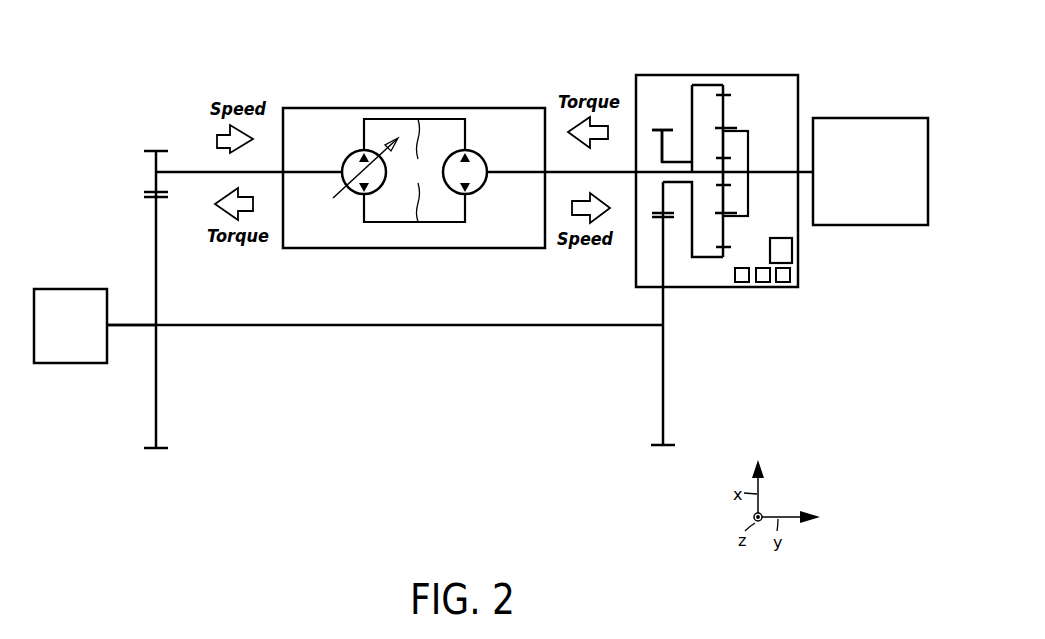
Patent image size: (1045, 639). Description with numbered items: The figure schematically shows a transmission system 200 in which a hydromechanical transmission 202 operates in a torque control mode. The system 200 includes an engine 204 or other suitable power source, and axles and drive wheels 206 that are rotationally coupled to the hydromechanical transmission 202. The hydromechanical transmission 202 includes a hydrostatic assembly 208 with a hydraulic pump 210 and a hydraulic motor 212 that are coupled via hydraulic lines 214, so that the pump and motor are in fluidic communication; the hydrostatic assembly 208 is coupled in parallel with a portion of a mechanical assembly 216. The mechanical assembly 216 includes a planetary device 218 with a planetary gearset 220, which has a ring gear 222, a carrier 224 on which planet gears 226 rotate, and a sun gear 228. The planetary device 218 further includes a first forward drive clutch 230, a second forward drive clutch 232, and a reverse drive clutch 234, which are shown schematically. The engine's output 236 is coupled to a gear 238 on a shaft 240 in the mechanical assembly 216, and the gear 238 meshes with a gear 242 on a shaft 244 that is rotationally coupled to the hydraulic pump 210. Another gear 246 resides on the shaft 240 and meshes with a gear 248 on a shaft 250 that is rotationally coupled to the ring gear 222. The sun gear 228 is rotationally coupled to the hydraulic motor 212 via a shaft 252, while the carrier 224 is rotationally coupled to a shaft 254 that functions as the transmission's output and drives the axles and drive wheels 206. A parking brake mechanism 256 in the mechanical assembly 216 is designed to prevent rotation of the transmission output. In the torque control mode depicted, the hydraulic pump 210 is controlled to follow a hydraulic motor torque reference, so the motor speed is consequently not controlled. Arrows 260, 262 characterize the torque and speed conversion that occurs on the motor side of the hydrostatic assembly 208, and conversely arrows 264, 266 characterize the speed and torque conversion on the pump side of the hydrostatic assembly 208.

The transmission system 200 is at (60, 48).
The hydromechanical transmission 202 is at (855, 61).
The engine 204 is at (40, 291).
The axles and drive wheels 206 is at (821, 119).
The hydrostatic assembly 208 is at (414, 165).
The hydraulic pump 210 is at (350, 153).
The hydraulic motor 212 is at (478, 153).
The hydraulic lines 214 is at (418, 170).
The mechanical assembly 216 is at (169, 492).
The planetary device 218 is at (725, 201).
The planetary gearset 220 is at (679, 96).
The ring gear 222 is at (731, 95).
The carrier 224 is at (740, 131).
The planet gears 226 is at (726, 234).
The sun gear 228 is at (724, 167).
The first forward drive clutch 230 is at (739, 283).
The second forward drive clutch 232 is at (785, 283).
The reverse drive clutch 234 is at (762, 283).
The engine output 236 is at (131, 325).
The gear 238 is at (157, 253).
The shaft 240 is at (228, 325).
The gear 242 is at (159, 148).
The shaft 244 is at (182, 170).
The gear 246 is at (660, 425).
The gear 248 is at (660, 195).
The shaft 250 is at (679, 184).
The shaft 252 is at (639, 170).
The shaft 254 is at (777, 174).
The parking brake mechanism 256 is at (792, 250).
The arrow 260 is at (604, 134).
The arrow 262 is at (573, 204).
The arrow 264 is at (217, 139).
The arrow 266 is at (252, 203).